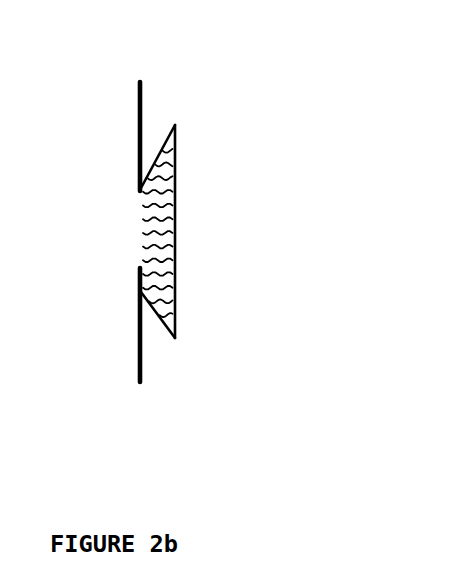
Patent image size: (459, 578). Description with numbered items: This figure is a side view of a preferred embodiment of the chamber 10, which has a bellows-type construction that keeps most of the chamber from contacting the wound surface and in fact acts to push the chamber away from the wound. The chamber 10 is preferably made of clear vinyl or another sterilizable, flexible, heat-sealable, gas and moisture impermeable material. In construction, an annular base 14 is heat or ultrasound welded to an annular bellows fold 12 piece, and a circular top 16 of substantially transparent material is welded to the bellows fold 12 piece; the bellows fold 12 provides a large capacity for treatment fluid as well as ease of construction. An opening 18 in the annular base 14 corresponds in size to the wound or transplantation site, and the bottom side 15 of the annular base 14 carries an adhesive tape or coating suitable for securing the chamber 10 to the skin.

The chamber 10 is at (193, 100).
The bellows fold 12 is at (175, 143).
The annular base 14 is at (143, 102).
The bottom side 15 is at (139, 333).
The circular top 16 is at (176, 233).
The opening 18 is at (140, 225).